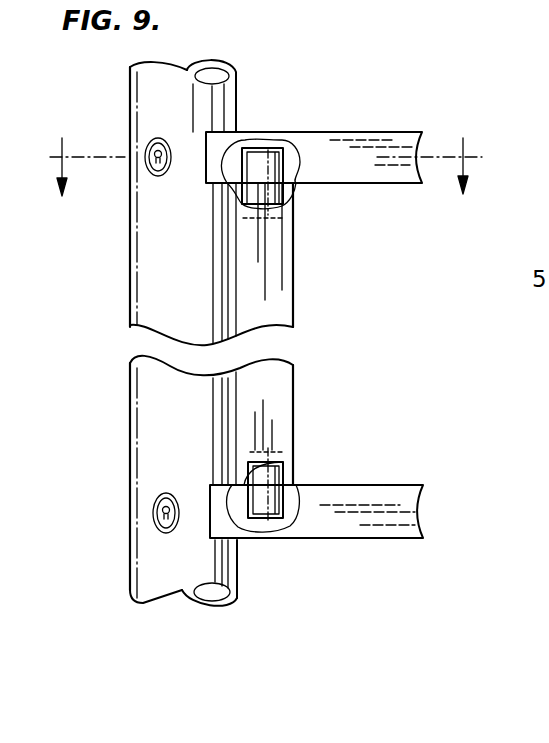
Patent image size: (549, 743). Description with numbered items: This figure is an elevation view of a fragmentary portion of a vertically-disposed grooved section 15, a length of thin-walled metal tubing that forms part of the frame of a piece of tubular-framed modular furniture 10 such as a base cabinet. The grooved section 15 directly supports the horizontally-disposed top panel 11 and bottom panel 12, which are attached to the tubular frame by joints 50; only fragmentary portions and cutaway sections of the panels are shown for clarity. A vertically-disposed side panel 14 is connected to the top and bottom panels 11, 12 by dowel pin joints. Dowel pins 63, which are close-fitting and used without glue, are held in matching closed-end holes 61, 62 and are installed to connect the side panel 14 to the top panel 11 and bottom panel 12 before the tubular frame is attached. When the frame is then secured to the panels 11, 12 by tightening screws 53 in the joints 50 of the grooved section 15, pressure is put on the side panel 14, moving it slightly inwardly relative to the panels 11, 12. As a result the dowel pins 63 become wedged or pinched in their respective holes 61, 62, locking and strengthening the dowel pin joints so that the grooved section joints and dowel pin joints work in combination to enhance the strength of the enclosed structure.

The modular furniture piece 10 is at (260, 144).
The top panel 11 is at (372, 132).
The bottom panel 12 is at (393, 530).
The side panel 14 is at (293, 322).
The grooved section 15 is at (150, 288).
The joint 50 is at (187, 122).
The screw 53 is at (155, 170).
The closed-end hole 61 is at (258, 150).
The closed-end hole 62 is at (275, 226).
The dowel pin 63 is at (287, 198).